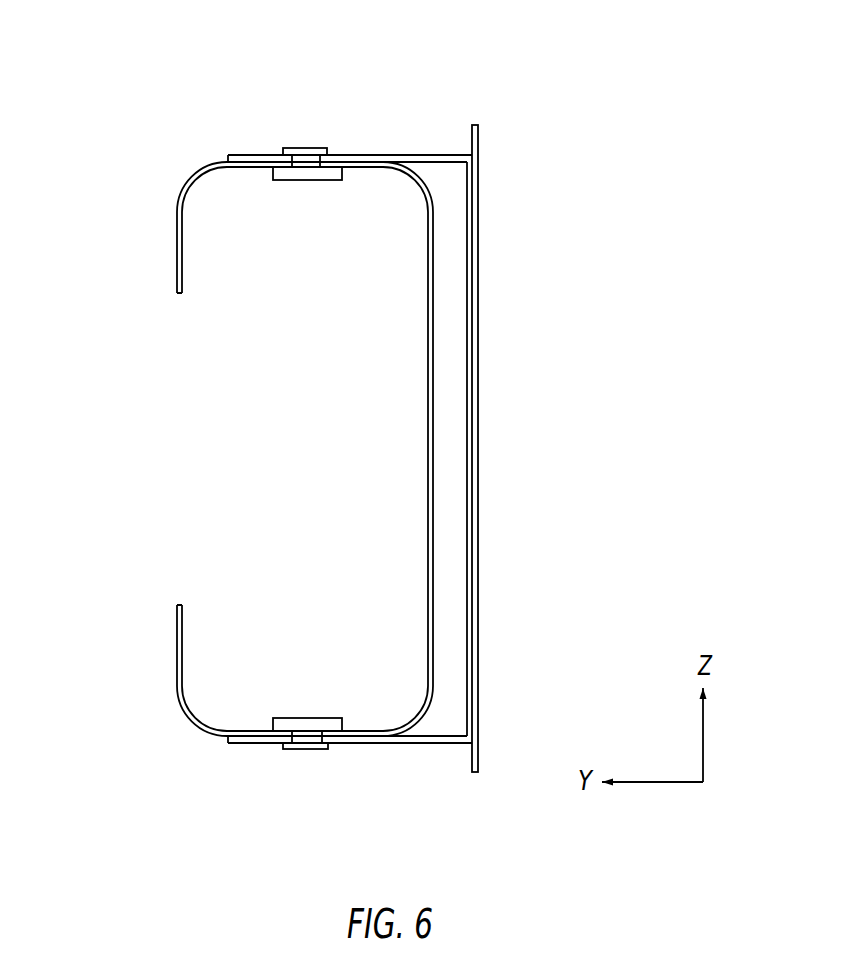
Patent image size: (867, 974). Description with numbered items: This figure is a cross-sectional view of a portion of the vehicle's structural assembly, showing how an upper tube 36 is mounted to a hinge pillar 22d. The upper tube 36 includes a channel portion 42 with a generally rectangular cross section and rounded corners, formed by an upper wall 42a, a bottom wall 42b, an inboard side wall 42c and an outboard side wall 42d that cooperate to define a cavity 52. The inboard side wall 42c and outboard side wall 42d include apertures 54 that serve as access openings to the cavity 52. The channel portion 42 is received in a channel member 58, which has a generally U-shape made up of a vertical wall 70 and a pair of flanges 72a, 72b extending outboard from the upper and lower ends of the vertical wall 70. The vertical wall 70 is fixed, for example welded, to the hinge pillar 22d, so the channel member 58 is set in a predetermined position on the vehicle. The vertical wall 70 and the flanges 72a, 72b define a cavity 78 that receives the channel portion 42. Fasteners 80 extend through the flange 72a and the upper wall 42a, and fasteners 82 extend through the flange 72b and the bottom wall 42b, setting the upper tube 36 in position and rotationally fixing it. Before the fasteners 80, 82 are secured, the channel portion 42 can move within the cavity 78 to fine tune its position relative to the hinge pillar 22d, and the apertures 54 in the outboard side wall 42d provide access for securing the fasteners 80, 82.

The hinge pillar 22d is at (478, 337).
The upper tube 36 is at (160, 240).
The channel portion 42 is at (338, 438).
The upper wall 42a is at (358, 165).
The bottom wall 42b is at (395, 731).
The inboard side wall 42c is at (433, 592).
The outboard side wall 42d is at (177, 272).
The cavity 52 is at (267, 328).
The apertures 54 is at (185, 488).
The channel member 58 is at (419, 437).
The vertical wall 70 is at (419, 444).
The flange 72a is at (400, 155).
The flange 72b is at (357, 743).
The cavity 78 is at (453, 212).
The fasteners 80 is at (303, 162).
The fasteners 82 is at (300, 748).